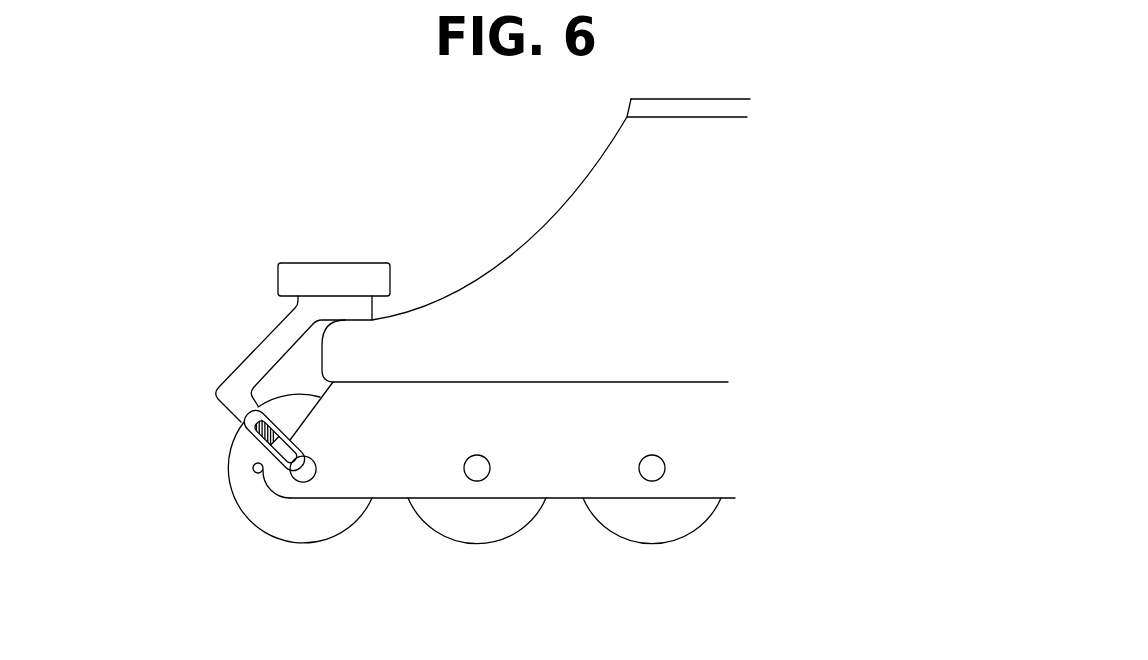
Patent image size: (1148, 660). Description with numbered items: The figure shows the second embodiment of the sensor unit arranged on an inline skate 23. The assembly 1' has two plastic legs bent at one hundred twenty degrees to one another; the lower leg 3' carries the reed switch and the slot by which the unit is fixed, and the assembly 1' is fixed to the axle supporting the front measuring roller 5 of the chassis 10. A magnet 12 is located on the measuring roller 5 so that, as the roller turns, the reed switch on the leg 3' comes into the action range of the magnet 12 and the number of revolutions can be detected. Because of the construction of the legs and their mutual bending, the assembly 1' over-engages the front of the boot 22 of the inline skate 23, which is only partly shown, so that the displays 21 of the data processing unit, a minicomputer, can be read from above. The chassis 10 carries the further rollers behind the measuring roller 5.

The sensor unit assembly 1' is at (257, 349).
The leg 3' is at (194, 436).
The measuring roller 5 is at (285, 527).
The chassis 10 is at (710, 465).
The magnet 12 is at (253, 469).
The displays 21 is at (333, 272).
The boot 22 is at (527, 255).
The inline skate 23 is at (807, 283).